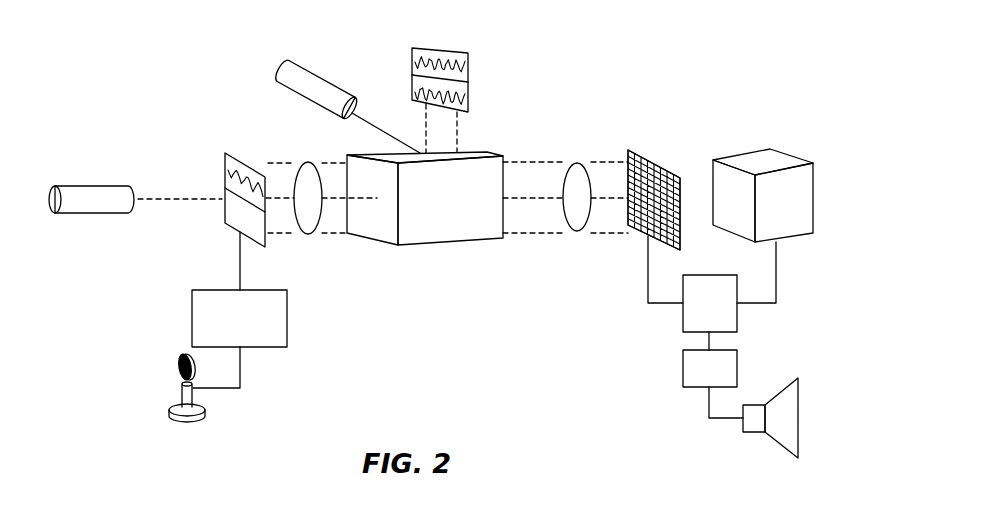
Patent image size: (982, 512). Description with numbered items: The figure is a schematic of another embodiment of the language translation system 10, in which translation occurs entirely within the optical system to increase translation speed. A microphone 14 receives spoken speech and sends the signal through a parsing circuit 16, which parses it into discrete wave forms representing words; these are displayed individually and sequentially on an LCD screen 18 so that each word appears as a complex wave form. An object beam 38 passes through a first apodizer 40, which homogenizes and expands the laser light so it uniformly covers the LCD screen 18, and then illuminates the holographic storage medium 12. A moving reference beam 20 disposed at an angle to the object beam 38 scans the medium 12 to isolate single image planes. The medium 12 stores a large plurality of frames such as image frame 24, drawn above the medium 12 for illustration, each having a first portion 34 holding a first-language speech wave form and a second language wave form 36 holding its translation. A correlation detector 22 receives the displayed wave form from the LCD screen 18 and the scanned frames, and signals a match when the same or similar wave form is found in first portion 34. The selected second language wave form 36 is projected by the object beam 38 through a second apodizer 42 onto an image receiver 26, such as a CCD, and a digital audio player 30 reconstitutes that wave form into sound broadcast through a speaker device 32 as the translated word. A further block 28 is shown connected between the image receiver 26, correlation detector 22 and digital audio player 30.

The language translation system 10 is at (692, 48).
The holographic storage medium 12 is at (485, 153).
The microphone 14 is at (178, 372).
The parsing circuit 16 is at (278, 305).
The LCD screen 18 is at (225, 153).
The reference beam 20 is at (330, 82).
The correlation detector 22 is at (791, 157).
The image frame 24 is at (457, 68).
The image receiver 26 is at (637, 153).
The processor 28 is at (732, 313).
The digital audio player 30 is at (687, 368).
The speaker device 32 is at (797, 415).
The first portion 34 is at (412, 58).
The second language wave form 36 is at (470, 97).
The object beam 38 is at (115, 190).
The first apodizer 40 is at (305, 163).
The second apodizer 42 is at (580, 163).